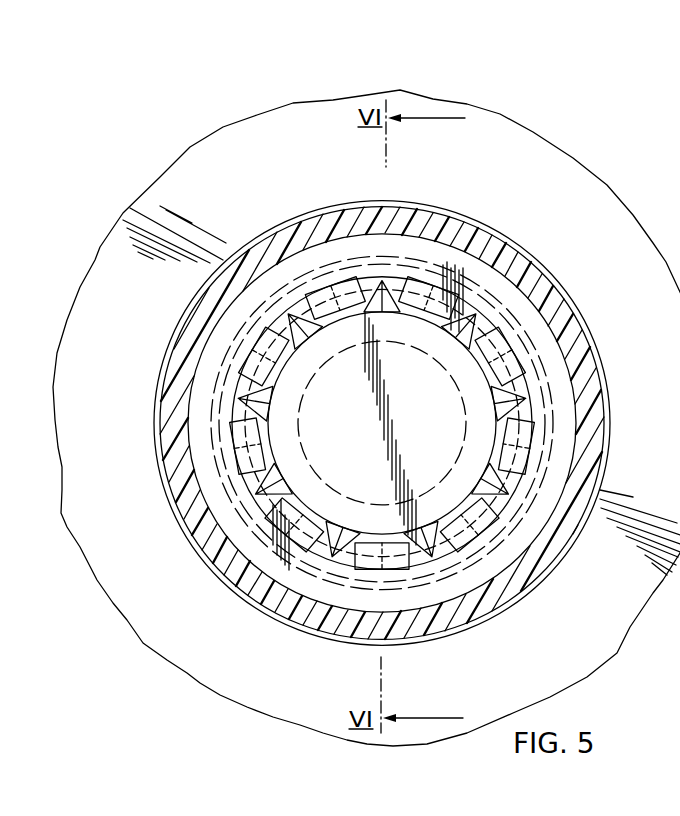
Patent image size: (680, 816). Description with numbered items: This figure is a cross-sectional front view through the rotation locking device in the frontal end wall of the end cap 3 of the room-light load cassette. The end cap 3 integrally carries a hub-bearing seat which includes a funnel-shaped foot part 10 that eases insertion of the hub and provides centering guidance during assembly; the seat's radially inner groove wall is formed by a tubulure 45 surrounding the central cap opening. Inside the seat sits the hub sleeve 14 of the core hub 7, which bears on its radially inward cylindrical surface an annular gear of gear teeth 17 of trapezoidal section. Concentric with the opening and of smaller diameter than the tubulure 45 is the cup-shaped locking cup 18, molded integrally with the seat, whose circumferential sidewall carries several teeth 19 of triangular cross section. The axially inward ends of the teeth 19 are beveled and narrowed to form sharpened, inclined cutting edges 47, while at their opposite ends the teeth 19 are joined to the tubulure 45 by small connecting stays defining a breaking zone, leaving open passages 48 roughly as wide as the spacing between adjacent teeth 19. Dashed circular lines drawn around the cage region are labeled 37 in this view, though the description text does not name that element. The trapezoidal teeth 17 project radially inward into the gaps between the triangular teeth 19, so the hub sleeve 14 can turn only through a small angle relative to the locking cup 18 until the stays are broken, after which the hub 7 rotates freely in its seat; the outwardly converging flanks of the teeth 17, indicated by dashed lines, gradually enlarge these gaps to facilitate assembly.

The end cap 3 is at (548, 187).
The core hub 7 is at (573, 288).
The funnel-shaped foot part 10 is at (597, 637).
The hub sleeve 14 is at (582, 379).
The gear teeth 17 is at (347, 297).
The locking cup 18 is at (349, 464).
The teeth 19 is at (295, 315).
The balls 37 is at (341, 296).
The tubulure 45 is at (500, 505).
The cutting edges 47 is at (475, 318).
The passages 48 is at (388, 552).